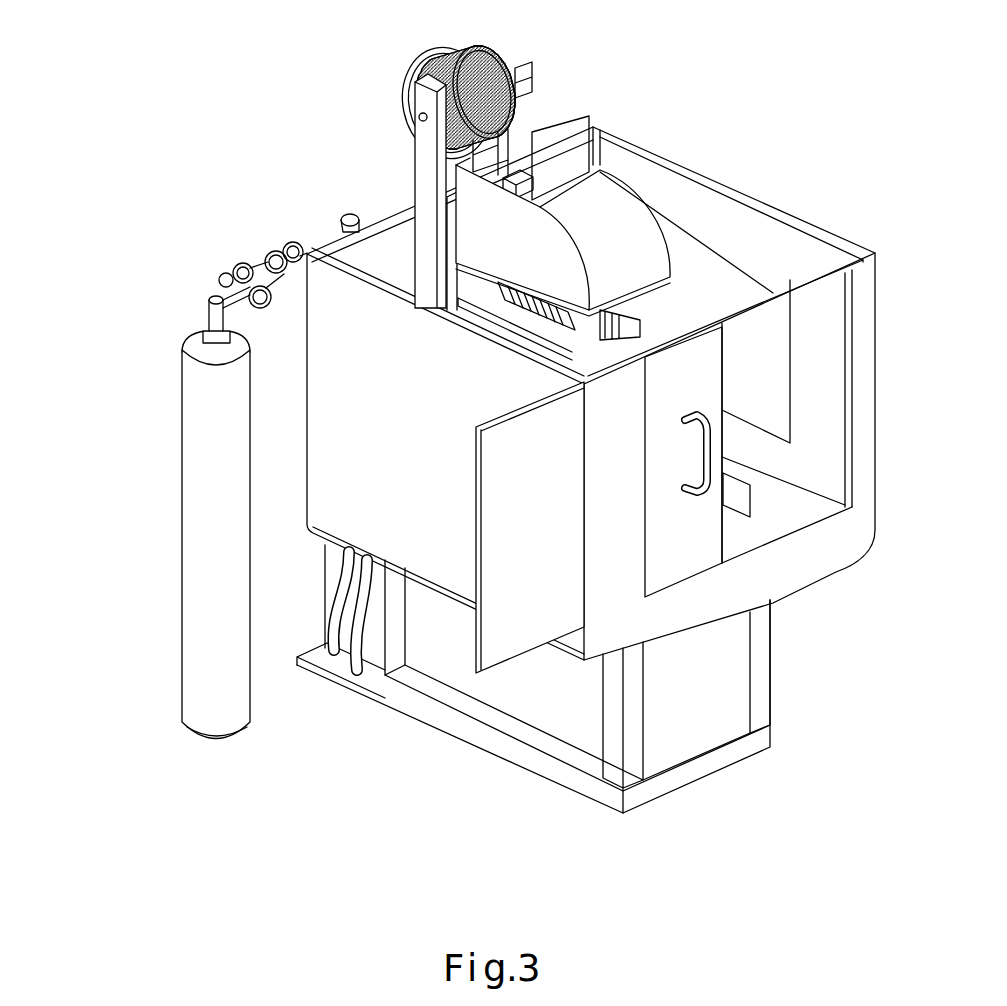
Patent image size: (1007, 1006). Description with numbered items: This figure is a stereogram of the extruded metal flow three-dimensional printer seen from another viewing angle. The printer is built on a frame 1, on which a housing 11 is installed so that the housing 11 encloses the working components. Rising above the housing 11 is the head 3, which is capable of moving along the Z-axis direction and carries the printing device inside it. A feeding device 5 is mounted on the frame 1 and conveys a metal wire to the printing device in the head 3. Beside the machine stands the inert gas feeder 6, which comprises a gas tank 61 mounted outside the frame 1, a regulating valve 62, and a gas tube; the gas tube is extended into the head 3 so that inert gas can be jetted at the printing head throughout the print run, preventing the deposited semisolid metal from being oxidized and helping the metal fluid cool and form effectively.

The frame 1 is at (775, 653).
The housing 11 is at (866, 393).
The head 3 is at (497, 243).
The feeding device 5 is at (525, 62).
The inert gas feeder 6 is at (122, 265).
The gas tank 61 is at (198, 403).
The regulating valve 62 is at (238, 265).